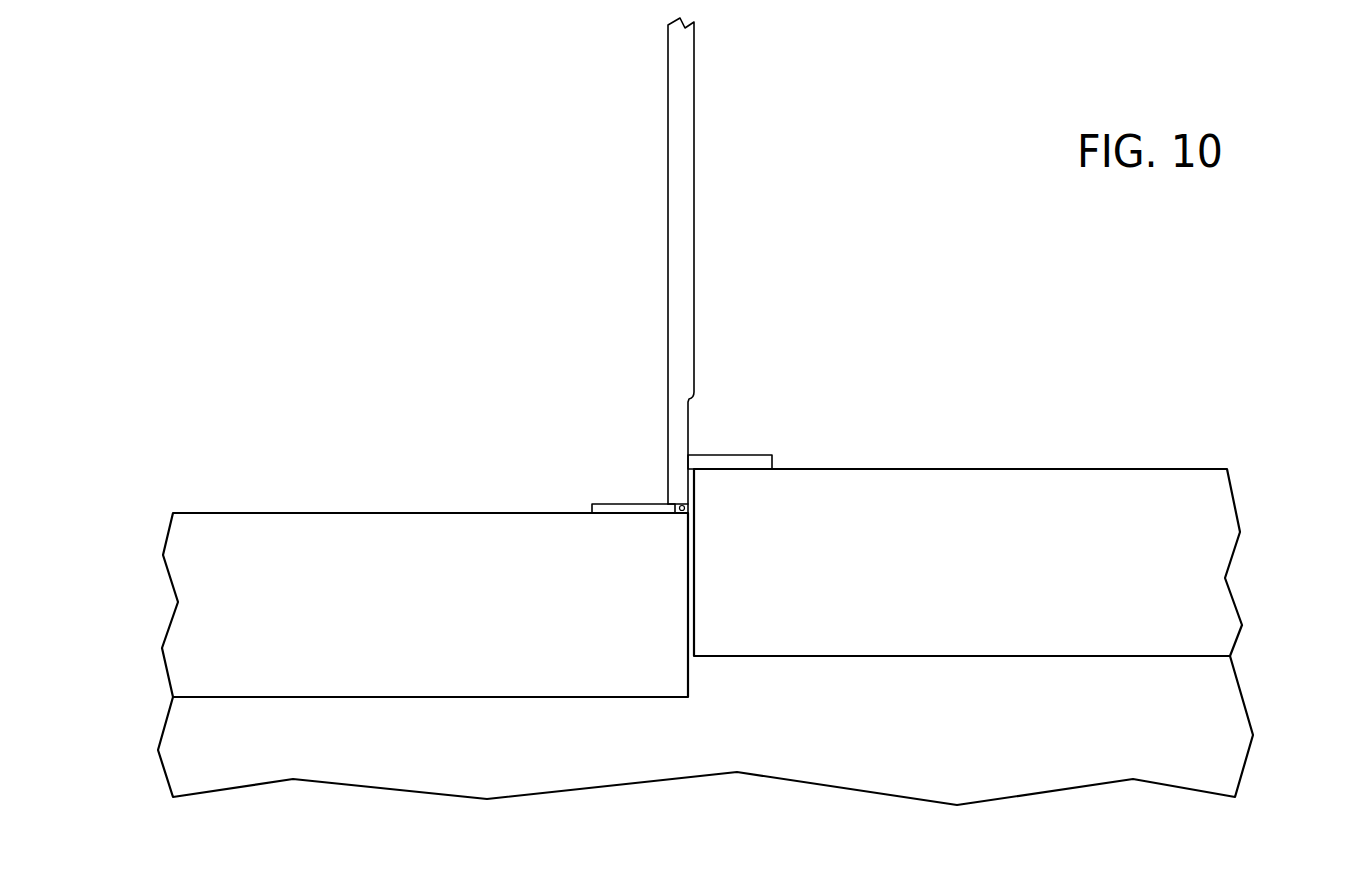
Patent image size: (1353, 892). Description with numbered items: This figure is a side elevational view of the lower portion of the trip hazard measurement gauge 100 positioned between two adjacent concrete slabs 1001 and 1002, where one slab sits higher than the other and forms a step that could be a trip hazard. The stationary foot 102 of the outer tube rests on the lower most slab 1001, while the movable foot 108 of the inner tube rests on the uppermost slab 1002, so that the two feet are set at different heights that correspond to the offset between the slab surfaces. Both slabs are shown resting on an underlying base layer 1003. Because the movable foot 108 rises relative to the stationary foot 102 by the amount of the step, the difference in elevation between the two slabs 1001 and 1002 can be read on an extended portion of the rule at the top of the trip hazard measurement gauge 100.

The trip hazard measurement gauge 100 is at (636, 182).
The stationary foot 102 is at (633, 505).
The movable foot 108 is at (740, 455).
The concrete slab 1001 is at (200, 597).
The concrete slab 1002 is at (1215, 560).
The concrete base 1003 is at (1218, 723).